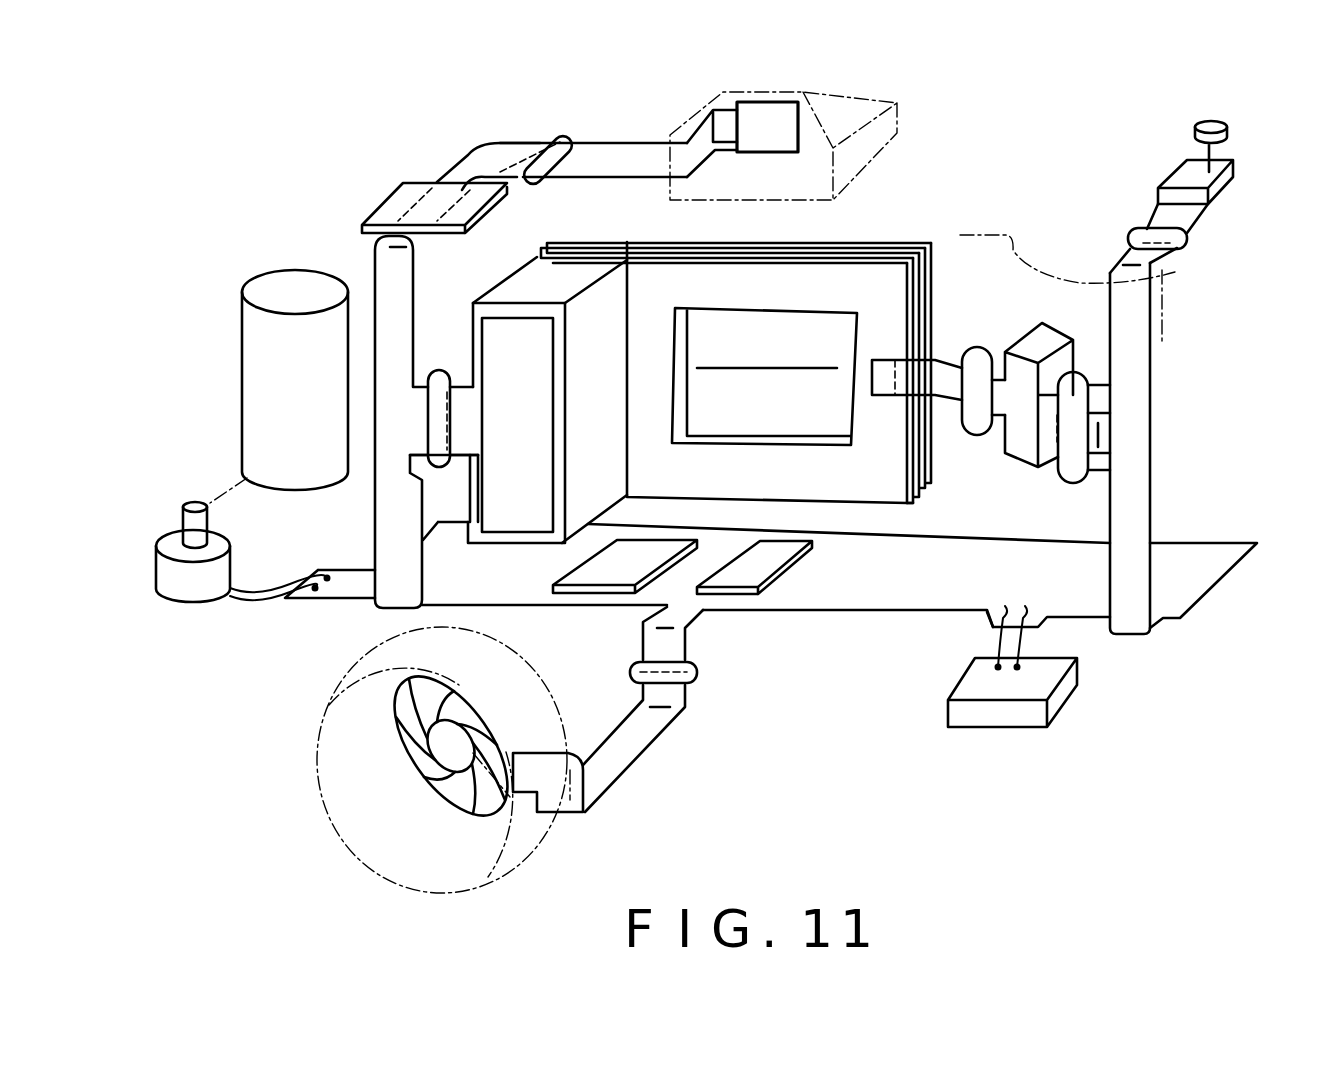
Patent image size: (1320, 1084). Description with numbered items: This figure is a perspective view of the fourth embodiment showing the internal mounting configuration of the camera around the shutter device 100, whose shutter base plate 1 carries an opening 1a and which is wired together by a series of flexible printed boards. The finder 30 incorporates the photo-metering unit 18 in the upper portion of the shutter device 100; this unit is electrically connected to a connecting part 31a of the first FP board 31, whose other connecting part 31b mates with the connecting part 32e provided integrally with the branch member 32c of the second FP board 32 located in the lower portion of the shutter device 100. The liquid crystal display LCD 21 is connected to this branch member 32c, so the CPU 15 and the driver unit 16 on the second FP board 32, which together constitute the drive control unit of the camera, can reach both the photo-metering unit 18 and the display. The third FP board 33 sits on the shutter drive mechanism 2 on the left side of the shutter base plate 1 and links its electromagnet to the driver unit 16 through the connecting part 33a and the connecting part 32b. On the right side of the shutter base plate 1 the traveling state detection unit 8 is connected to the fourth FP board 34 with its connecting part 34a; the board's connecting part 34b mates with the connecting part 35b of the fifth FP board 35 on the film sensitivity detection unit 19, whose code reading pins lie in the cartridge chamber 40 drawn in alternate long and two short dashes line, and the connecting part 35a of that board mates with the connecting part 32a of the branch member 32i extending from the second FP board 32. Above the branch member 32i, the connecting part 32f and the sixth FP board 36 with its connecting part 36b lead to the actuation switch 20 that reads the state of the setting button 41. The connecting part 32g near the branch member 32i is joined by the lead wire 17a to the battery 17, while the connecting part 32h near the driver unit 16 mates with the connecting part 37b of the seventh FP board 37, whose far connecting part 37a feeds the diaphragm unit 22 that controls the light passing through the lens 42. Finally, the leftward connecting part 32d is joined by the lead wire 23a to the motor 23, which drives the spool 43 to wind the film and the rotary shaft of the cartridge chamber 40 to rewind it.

The shutter base plate 1 is at (817, 262).
The opening 1a is at (745, 437).
The shutter drive mechanism 2 is at (530, 262).
The traveling state detection unit 8 is at (885, 300).
The CPU 15 is at (588, 578).
The driver unit 16 is at (737, 576).
The battery 17 is at (1062, 697).
The lead wire 17a is at (1018, 638).
The photo-metering unit 18 is at (765, 152).
The film sensitivity detection unit 19 is at (1050, 338).
The actuation switch 20 is at (1233, 170).
The liquid crystal display LCD 21 is at (438, 187).
The diaphragm unit 22 is at (457, 800).
The motor 23 is at (175, 590).
The lead wire 23a is at (250, 600).
The finder 30 is at (897, 130).
The first FP board 31 is at (645, 160).
The connecting part 31a is at (712, 155).
The connecting part 31b is at (582, 142).
The second FP board 32 is at (862, 600).
The connecting part 32a is at (1092, 400).
The connecting part 32b is at (443, 370).
The branch member 32c is at (385, 257).
The connecting part 32d is at (332, 594).
The connecting part 32e is at (556, 142).
The connecting part 32f is at (1172, 250).
The connecting part 32g is at (987, 624).
The connecting part 32h is at (693, 684).
The branch member 32i is at (1128, 483).
The third FP board 33 is at (497, 325).
The connecting part 33a is at (425, 435).
The fourth FP board 34 is at (950, 400).
The connecting part 34a is at (915, 470).
The connecting part 34b is at (972, 362).
The fifth FP board 35 is at (1026, 454).
The connecting part 35a is at (1092, 380).
The connecting part 35b is at (985, 348).
The sixth FP board 36 is at (1193, 212).
The connecting part 36b is at (1185, 242).
The seventh FP board 37 is at (620, 755).
The connecting part 37a is at (525, 800).
The connecting part 37b is at (645, 685).
The cartridge chamber 40 is at (1050, 278).
The setting button 41 is at (1228, 132).
The lens 42 is at (320, 785).
The spool 43 is at (247, 400).
The shutter device 100 is at (627, 241).